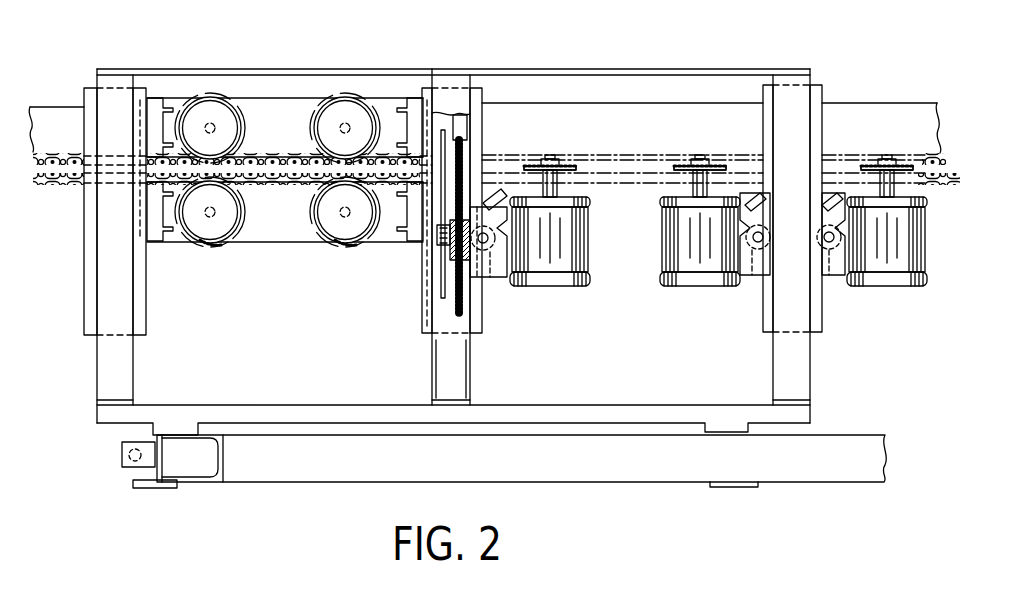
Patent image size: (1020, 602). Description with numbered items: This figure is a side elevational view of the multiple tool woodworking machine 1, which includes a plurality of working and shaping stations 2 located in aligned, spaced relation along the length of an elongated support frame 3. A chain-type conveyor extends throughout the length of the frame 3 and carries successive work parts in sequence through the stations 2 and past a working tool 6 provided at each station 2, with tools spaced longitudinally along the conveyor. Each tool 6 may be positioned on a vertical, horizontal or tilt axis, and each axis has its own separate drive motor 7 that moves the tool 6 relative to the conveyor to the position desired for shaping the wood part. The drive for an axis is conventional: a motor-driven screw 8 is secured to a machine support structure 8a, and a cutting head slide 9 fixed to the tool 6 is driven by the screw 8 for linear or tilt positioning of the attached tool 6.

The multiple tool woodworking machine 1 is at (840, 73).
The working and shaping stations 2 is at (322, 209).
The elongated support frame 3 is at (464, 370).
The working tool 6 is at (229, 249).
The drive motor 7 is at (460, 123).
The motor-driven screw 8 is at (458, 303).
The machine support structure 8a is at (437, 358).
The cutting head slide 9 is at (473, 265).